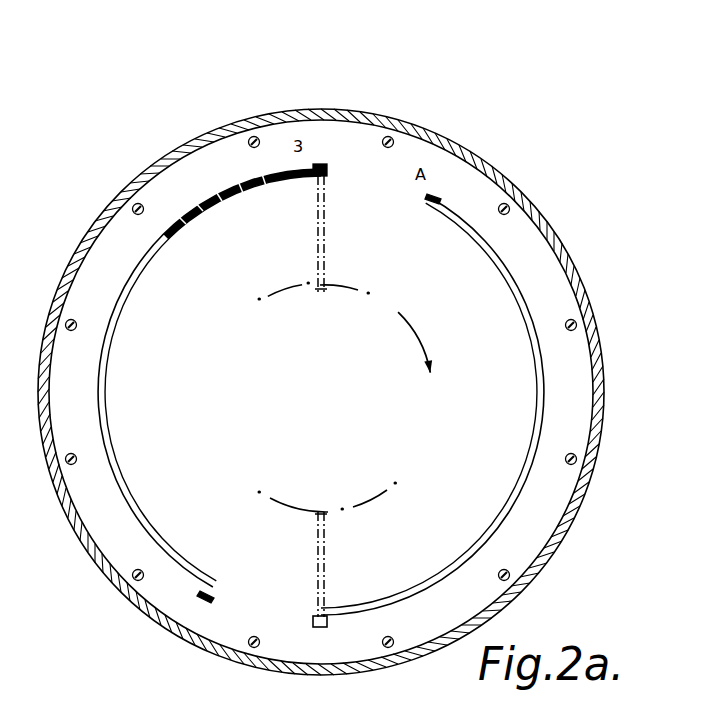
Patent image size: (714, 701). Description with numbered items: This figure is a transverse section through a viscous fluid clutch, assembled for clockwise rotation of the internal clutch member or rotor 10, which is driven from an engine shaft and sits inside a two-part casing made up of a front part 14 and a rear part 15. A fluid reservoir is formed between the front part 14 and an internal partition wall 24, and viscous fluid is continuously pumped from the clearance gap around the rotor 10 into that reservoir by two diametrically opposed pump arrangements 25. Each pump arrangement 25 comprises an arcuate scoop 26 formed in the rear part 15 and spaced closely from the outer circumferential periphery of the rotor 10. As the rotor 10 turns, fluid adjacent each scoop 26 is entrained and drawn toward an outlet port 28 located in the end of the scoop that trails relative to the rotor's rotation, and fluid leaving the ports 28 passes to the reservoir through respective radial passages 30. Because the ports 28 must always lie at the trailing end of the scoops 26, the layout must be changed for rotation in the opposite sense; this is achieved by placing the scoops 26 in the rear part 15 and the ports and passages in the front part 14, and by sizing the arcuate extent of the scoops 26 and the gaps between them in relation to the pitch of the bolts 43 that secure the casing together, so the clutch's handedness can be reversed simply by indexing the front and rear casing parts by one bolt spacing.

The rotor 10 is at (329, 428).
The front part 14 is at (556, 548).
The rear part 15 is at (519, 553).
The internal partition wall 24 is at (537, 507).
The pump arrangement 25 is at (118, 528).
The arcuate scoop 26 is at (102, 420).
The outlet port 28 is at (327, 182).
The radial passage 30 is at (331, 257).
The bolt 43 is at (580, 322).